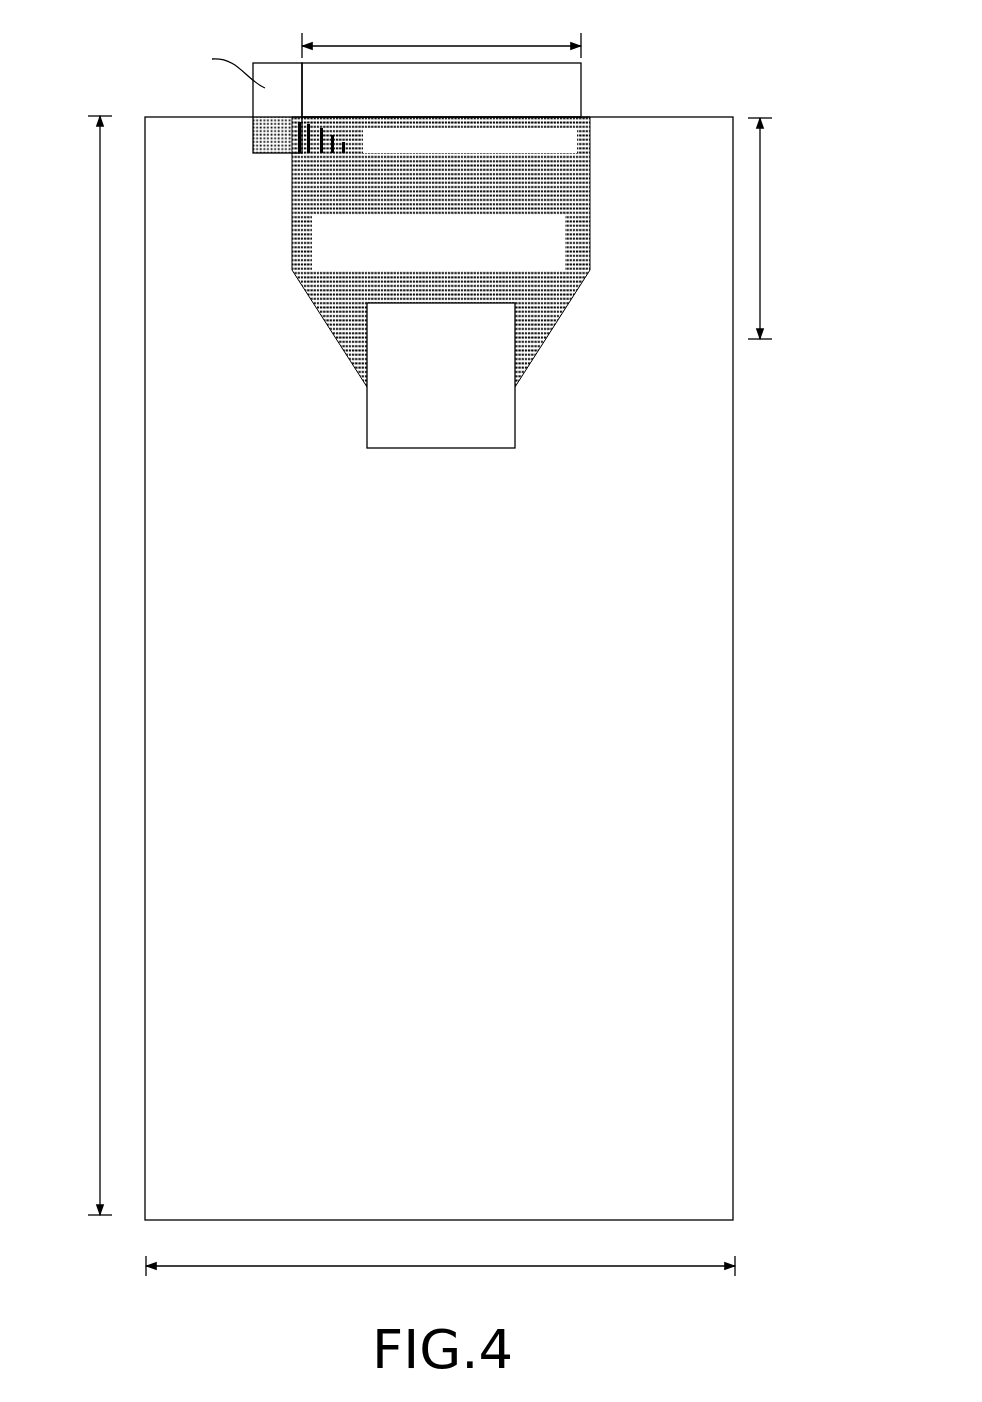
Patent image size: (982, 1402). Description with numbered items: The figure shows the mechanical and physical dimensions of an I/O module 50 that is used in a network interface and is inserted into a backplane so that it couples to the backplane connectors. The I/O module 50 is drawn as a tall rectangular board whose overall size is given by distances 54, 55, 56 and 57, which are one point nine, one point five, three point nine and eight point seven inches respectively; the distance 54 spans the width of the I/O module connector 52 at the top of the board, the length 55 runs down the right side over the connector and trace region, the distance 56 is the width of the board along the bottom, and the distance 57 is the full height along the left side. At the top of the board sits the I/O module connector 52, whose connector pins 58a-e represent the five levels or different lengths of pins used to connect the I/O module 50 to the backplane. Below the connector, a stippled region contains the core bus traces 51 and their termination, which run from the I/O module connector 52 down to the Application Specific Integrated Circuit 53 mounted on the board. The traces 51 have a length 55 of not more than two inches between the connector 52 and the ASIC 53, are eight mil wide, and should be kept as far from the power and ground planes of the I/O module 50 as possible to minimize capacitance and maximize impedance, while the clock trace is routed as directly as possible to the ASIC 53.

The I/O module 50 is at (733, 737).
The traces 51 is at (441, 252).
The I/O module connector 52 is at (577, 130).
The Application Specific Integrated Circuit (ASIC) 53 is at (441, 375).
The distance 54 is at (441, 33).
The length 55 is at (780, 228).
The distance 56 is at (440, 1277).
The distance 57 is at (79, 665).
The pins 58a-e is at (298, 137).